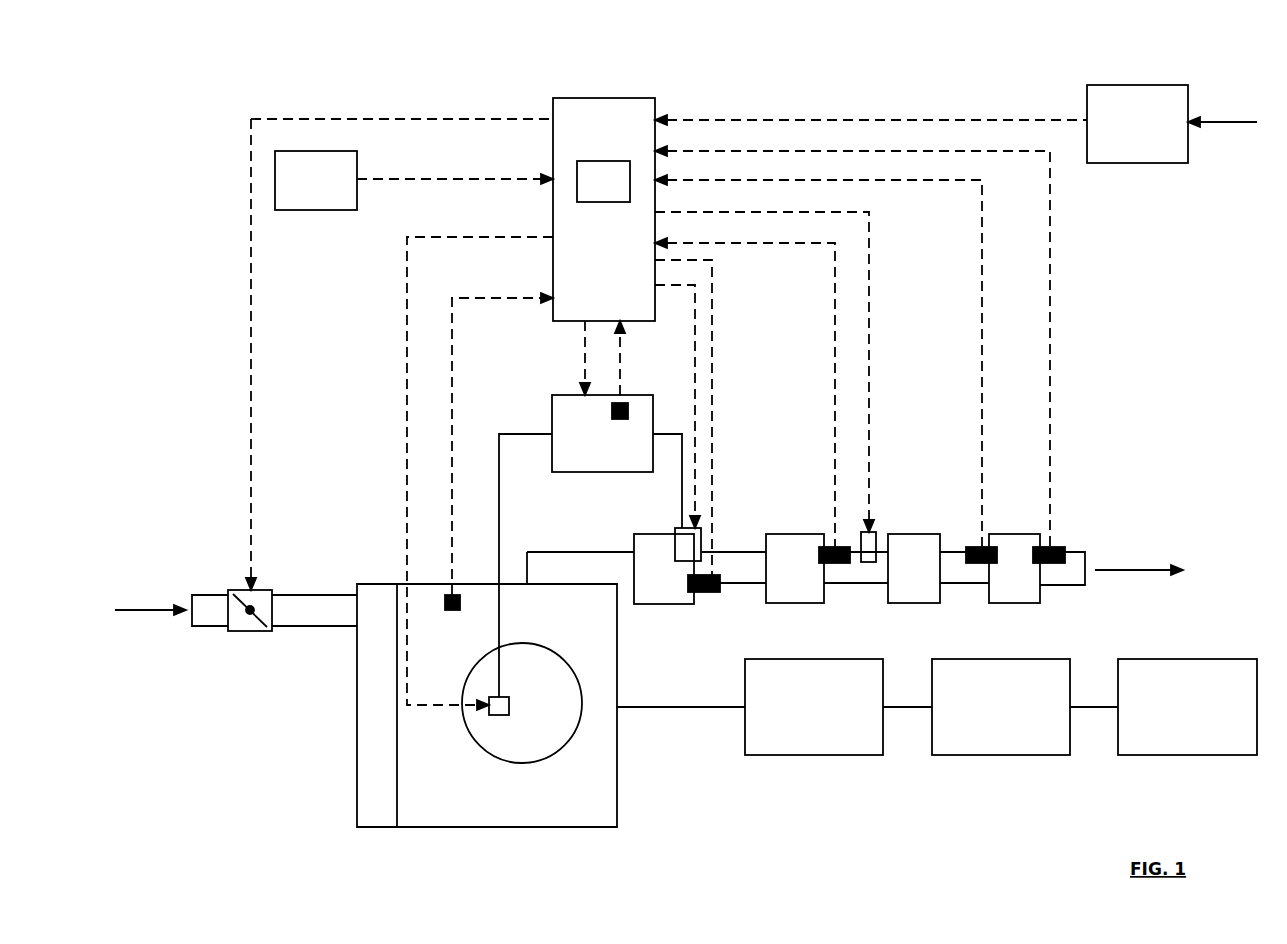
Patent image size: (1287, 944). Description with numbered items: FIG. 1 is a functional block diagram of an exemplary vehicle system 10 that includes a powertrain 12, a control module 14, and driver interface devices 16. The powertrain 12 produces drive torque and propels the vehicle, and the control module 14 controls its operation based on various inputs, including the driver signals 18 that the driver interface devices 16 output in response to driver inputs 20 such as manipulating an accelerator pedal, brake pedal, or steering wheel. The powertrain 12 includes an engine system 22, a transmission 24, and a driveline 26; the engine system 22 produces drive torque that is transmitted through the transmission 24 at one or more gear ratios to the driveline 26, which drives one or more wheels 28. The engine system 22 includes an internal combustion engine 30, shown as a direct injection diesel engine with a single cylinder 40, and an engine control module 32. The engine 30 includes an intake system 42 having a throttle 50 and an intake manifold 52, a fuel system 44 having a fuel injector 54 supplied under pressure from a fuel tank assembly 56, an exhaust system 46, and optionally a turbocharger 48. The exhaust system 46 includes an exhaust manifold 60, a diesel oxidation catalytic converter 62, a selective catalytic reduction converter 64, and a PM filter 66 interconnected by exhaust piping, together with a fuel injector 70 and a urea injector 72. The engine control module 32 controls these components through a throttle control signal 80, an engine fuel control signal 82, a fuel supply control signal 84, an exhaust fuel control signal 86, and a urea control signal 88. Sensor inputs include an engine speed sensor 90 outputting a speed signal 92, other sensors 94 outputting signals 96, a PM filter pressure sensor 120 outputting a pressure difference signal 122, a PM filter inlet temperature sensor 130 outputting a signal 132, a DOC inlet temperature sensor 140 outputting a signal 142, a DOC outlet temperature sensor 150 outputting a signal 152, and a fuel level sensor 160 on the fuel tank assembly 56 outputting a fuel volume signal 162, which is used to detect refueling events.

The vehicle system 10 is at (162, 93).
The powertrain 12 is at (956, 830).
The control module 14 is at (611, 98).
The driver interface devices 16 is at (1138, 163).
The driver signals 18 is at (999, 120).
The driver inputs 20 is at (1230, 123).
The engine system 22 is at (218, 327).
The transmission 24 is at (816, 755).
The driveline 26 is at (1002, 755).
The wheels 28 is at (1188, 755).
The internal combustion engine 30 is at (357, 709).
The engine control module 32 is at (609, 161).
The cylinder 40 is at (545, 647).
The intake system 42 is at (322, 595).
The fuel system 44 is at (499, 434).
The exhaust system 46 is at (544, 552).
The turbocharger 48 is at (666, 604).
The throttle 50 is at (262, 590).
The intake manifold 52 is at (357, 777).
The fuel injector 54 is at (509, 715).
The fuel tank assembly 56 is at (552, 411).
The exhaust manifold 60 is at (600, 552).
The diesel oxidation-type catalytic converter 62 is at (796, 604).
The selective catalytic reduction catalytic converter 64 is at (916, 604).
The PM filter 66 is at (1016, 604).
The fuel injector 70 is at (681, 528).
The urea injector 72 is at (868, 562).
The throttle control signal 80 is at (449, 116).
The engine fuel control signal 82 is at (441, 232).
The fuel supply control signal 84 is at (578, 372).
The exhaust fuel control signal 86 is at (696, 407).
The urea control signal 88 is at (869, 470).
The engine speed sensor 90 is at (452, 610).
The engine speed signal 92 is at (471, 297).
The other sensors 94 is at (312, 210).
The sensor signals 96 is at (381, 178).
The PM filter pressure sensor 120 is at (1052, 563).
The PM filter pressure signal 122 is at (1050, 470).
The PM filter inlet temperature sensor 130 is at (982, 563).
The PM filter inlet temperature signal 132 is at (982, 470).
The DOC inlet temperature sensor 140 is at (706, 592).
The DOC inlet temperature signal 142 is at (717, 525).
The DOC outlet temperature sensor 150 is at (836, 564).
The DOC outlet temperature signal 152 is at (835, 465).
The fuel level sensor 160 is at (620, 419).
The fuel level signal 162 is at (624, 372).